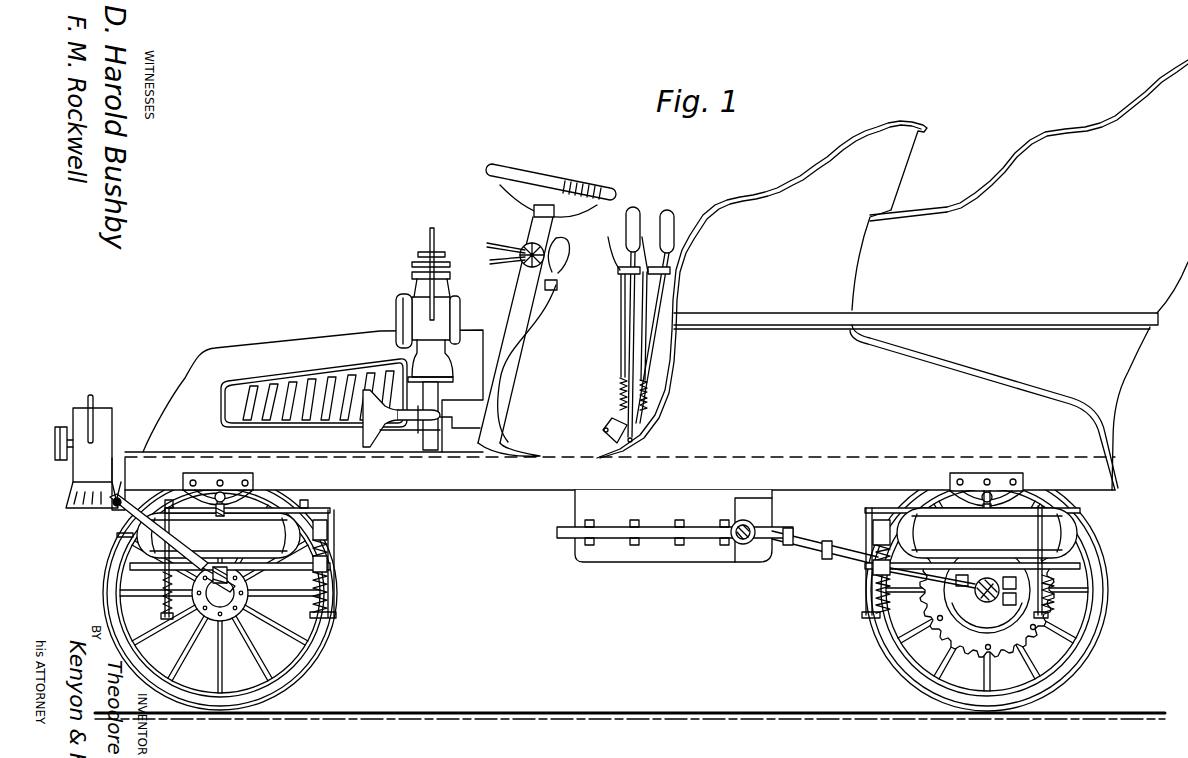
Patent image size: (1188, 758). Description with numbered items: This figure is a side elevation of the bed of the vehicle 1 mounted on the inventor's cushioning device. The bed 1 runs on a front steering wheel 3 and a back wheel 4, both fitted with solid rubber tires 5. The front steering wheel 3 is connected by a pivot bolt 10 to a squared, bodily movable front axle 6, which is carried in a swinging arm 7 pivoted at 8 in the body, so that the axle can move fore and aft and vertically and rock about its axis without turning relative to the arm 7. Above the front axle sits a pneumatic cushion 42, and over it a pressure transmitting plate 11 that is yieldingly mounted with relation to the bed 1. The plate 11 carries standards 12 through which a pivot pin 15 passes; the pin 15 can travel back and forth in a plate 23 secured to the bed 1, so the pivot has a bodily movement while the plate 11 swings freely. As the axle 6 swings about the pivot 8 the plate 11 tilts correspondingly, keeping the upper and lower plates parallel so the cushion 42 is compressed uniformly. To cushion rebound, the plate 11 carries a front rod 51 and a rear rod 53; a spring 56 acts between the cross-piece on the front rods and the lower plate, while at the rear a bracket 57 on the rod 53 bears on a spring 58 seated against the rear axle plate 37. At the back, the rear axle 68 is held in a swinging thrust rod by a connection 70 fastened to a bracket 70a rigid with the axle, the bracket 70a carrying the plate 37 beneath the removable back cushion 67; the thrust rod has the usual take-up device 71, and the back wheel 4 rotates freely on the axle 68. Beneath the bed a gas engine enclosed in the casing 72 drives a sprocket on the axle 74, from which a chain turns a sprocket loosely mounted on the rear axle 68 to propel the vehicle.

The bed of the vehicle 1 is at (1062, 447).
The front steering wheel 3 is at (287, 632).
The back wheel 4 is at (1082, 622).
The solid rubber tire 5 is at (328, 672).
The front axle 6 is at (184, 648).
The swinging arm 7 is at (150, 536).
The pivot 8 is at (113, 504).
The pivot bolt 10 is at (295, 571).
The pressure transmitting plate 11 is at (300, 512).
The standard 12 is at (185, 488).
The pivot pin 15 is at (990, 457).
The plate 23 is at (225, 478).
The rear axle plate 37 is at (900, 605).
The pneumatic cushion 42 is at (218, 535).
The rod 51 is at (1048, 550).
The rear rod 53 is at (880, 584).
The spring 56 is at (332, 598).
The bracket 57 is at (872, 614).
The spring 58 is at (812, 590).
The back cushion 67 is at (987, 533).
The rear axle 68 is at (1035, 640).
The connection 70 is at (958, 580).
The bracket 70a is at (988, 597).
The take-up device 71 is at (818, 553).
The casing 72 is at (672, 550).
The axle 74 is at (743, 545).